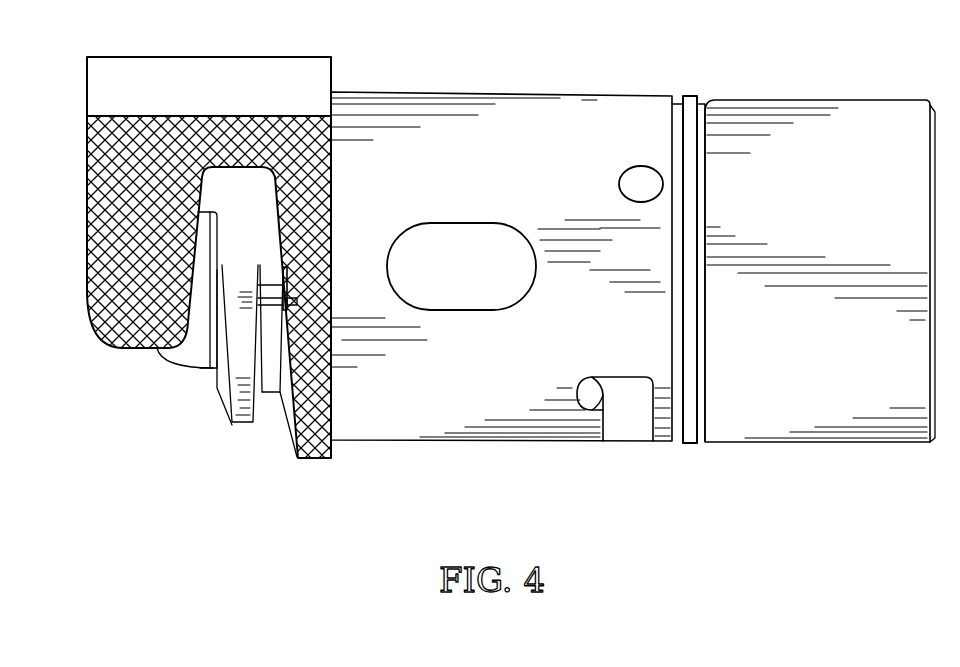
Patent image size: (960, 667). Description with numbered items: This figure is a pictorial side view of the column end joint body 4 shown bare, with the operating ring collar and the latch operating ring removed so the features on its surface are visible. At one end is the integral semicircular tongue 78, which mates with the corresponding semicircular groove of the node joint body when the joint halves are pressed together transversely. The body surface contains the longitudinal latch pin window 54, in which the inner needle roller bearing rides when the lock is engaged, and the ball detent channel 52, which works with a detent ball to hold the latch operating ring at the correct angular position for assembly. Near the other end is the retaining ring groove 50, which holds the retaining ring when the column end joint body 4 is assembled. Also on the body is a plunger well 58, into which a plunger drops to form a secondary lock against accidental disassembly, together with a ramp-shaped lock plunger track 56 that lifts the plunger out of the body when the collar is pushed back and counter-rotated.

The column end joint body 4 is at (457, 92).
The retaining ring groove 50 is at (677, 100).
The ball detent channel 52 is at (642, 180).
The latch pin window 54 is at (470, 277).
The lock plunger track 56 is at (620, 410).
The plunger well 58 is at (590, 403).
The semicircular tongue 78 is at (243, 422).